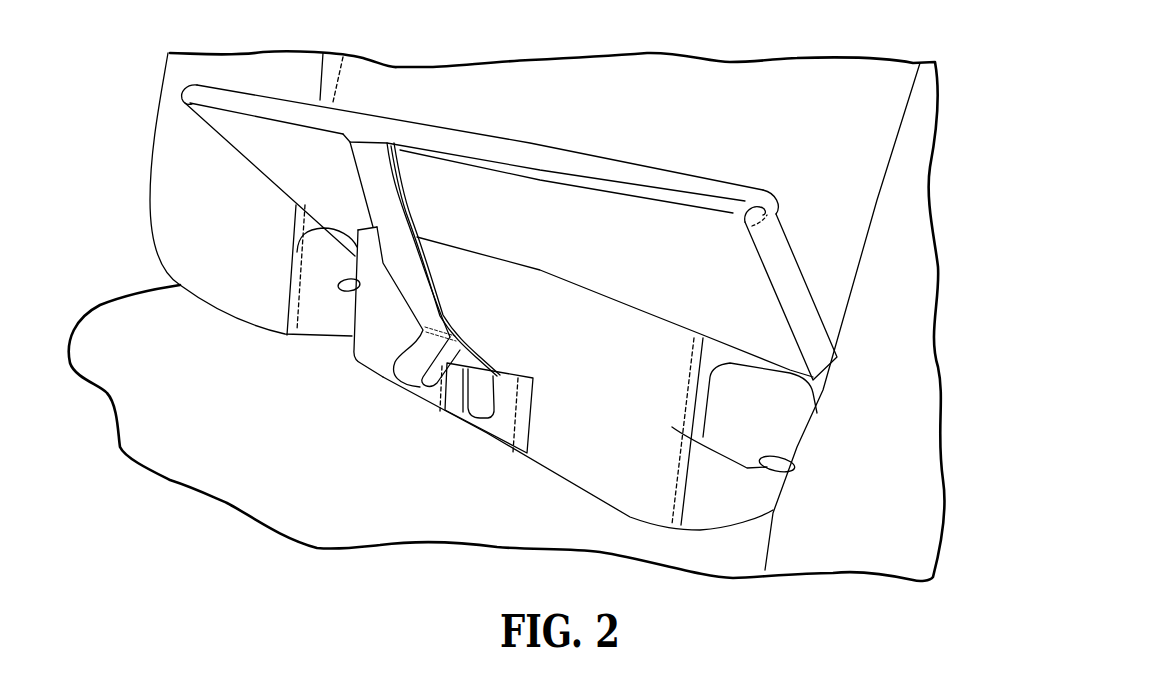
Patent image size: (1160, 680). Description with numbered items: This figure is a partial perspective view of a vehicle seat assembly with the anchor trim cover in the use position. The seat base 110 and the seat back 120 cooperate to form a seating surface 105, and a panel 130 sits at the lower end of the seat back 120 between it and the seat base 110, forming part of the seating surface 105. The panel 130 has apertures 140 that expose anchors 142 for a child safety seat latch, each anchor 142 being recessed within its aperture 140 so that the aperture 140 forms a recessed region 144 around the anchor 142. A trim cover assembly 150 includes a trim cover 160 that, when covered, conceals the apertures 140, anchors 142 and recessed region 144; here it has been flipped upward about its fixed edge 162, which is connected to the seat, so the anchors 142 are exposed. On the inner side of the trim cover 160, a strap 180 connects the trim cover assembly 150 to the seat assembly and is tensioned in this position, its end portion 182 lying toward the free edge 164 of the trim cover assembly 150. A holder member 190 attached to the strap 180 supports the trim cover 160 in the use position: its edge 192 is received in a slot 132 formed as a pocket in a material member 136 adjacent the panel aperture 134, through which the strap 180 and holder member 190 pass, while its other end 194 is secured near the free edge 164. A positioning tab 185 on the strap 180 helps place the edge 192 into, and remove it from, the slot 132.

The seating surface 105 is at (478, 462).
The seat base 110 is at (517, 535).
The seat back 120 is at (858, 130).
The panel 130 is at (787, 403).
The slot 132 is at (490, 407).
The panel aperture 134 is at (392, 429).
The material member 136 is at (510, 413).
The aperture 140 is at (758, 492).
The anchor 142 is at (343, 293).
The recessed region 144 is at (320, 291).
The trim cover assembly 150 is at (480, 120).
The trim cover 160 is at (590, 207).
The fixed edge 162 is at (813, 293).
The free edge 164 is at (650, 173).
The strap 180 is at (370, 196).
The end portion 182 is at (370, 140).
The positioning tab 185 is at (400, 367).
The holder member 190 is at (713, 177).
The edge 192 is at (517, 377).
The other end 194 is at (363, 155).